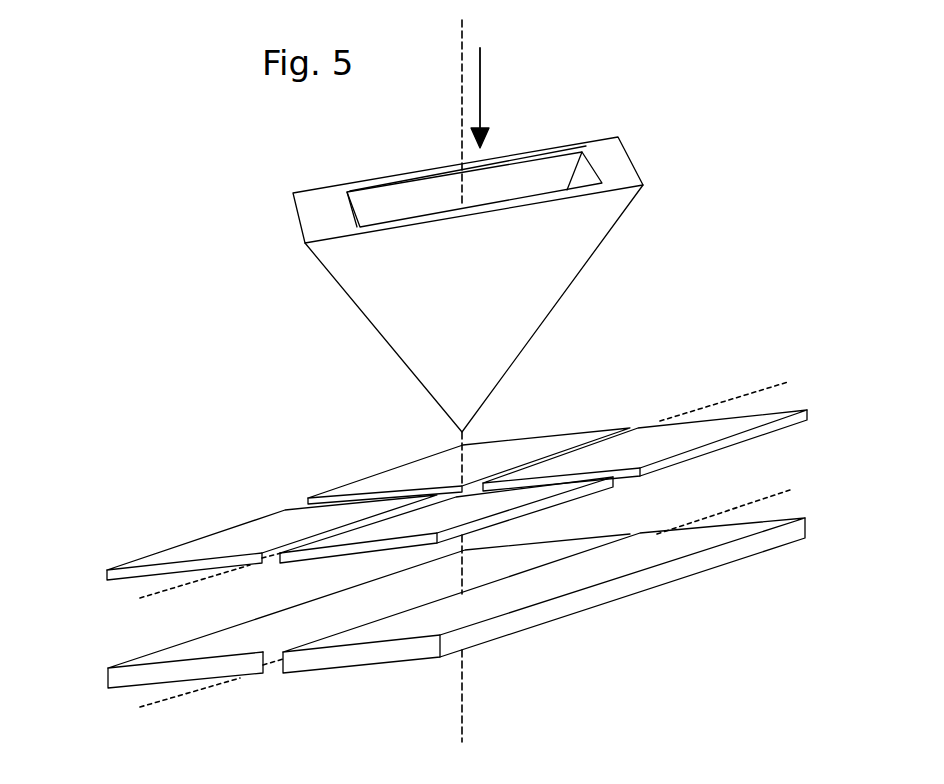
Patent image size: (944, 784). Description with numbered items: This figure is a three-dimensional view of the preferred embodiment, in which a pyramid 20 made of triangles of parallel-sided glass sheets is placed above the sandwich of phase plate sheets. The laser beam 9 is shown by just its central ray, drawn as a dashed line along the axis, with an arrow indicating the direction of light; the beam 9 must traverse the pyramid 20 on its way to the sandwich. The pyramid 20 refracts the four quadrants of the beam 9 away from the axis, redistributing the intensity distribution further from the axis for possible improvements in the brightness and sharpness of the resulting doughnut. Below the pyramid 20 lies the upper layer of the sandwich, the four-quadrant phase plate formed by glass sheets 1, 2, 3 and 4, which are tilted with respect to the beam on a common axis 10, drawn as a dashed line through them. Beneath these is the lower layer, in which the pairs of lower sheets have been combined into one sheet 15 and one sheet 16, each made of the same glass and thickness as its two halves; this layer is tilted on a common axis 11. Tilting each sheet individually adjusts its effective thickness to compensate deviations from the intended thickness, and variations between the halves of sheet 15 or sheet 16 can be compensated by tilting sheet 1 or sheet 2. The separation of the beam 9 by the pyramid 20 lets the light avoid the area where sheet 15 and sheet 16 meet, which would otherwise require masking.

The glass sheet 1 is at (528, 437).
The glass sheet 2 is at (797, 428).
The glass sheet 3 is at (583, 498).
The glass sheet 4 is at (205, 534).
The laser beam 9 is at (460, 115).
The common axis 10 is at (747, 388).
The common axis 11 is at (793, 485).
The combined sheet 15 is at (104, 668).
The combined sheet 16 is at (508, 640).
The pyramid 20 is at (581, 137).